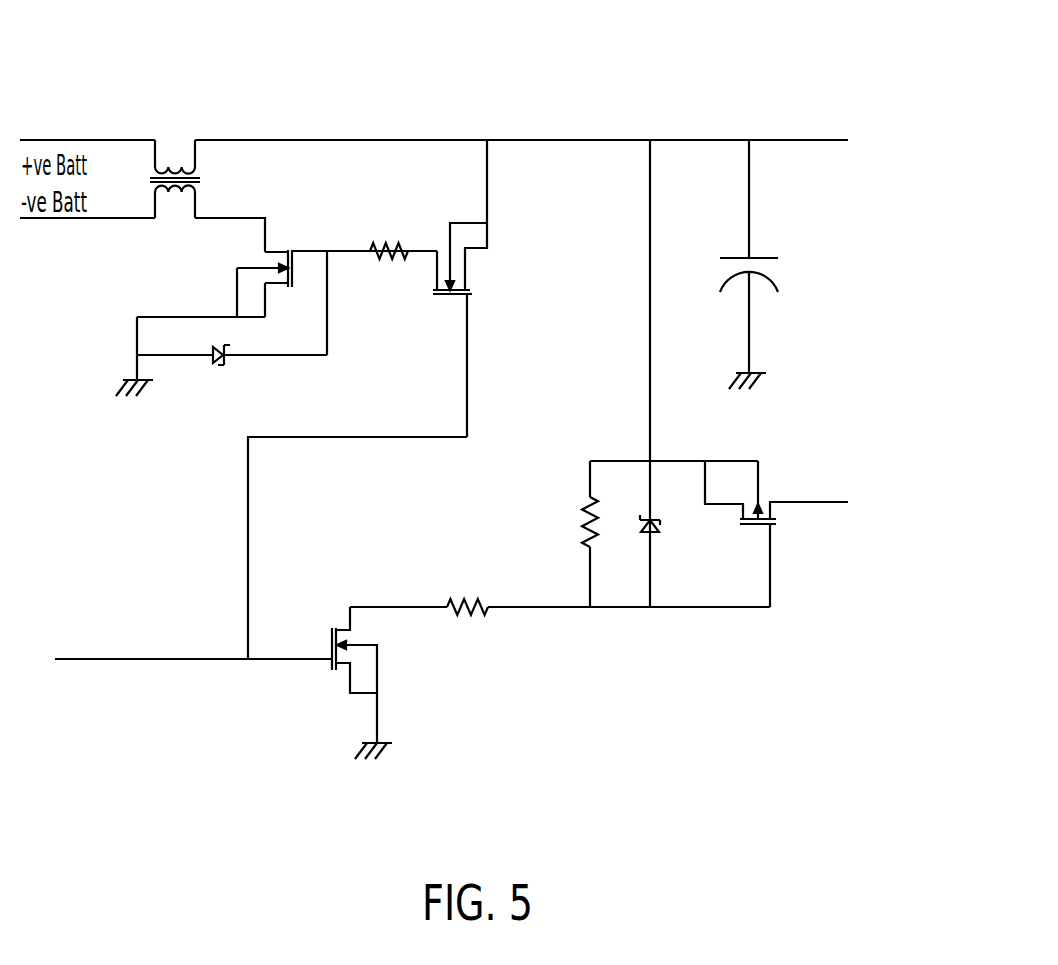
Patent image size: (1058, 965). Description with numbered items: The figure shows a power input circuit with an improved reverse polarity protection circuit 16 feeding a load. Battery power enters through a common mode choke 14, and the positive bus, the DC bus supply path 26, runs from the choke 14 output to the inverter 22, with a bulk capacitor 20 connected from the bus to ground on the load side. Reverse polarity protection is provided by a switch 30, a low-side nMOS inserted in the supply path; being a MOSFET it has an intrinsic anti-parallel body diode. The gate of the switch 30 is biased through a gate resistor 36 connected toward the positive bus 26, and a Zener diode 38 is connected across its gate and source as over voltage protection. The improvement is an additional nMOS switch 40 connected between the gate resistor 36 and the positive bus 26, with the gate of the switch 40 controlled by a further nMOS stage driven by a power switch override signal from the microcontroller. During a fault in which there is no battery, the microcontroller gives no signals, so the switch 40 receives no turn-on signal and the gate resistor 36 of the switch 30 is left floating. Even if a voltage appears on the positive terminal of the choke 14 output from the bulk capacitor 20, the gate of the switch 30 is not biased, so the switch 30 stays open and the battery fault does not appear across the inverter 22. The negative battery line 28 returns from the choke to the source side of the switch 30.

The common mode choke 14 is at (163, 169).
The reverse polarity protection circuit 16 is at (459, 101).
The bulk capacitor 20 is at (757, 258).
The inverter 22 is at (785, 156).
The DC bus supply path 26 is at (228, 140).
The negative supply line 28 is at (206, 220).
The switch 30 is at (292, 282).
The gate resistor 36 is at (386, 244).
The Zener diode 38 is at (225, 366).
The switch 40 is at (449, 298).